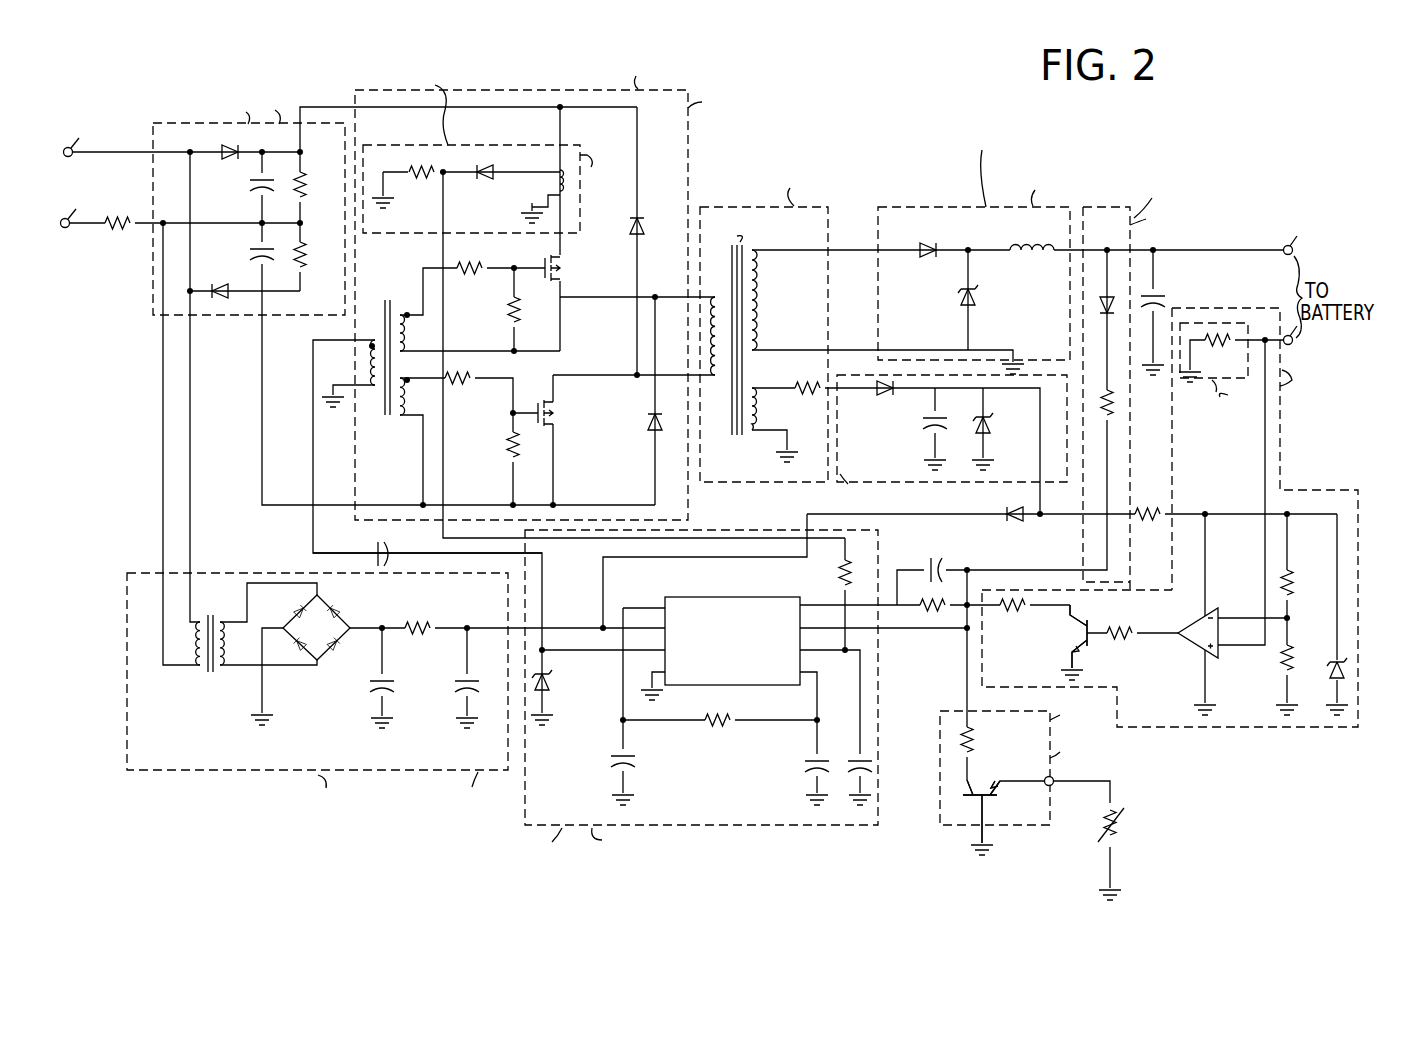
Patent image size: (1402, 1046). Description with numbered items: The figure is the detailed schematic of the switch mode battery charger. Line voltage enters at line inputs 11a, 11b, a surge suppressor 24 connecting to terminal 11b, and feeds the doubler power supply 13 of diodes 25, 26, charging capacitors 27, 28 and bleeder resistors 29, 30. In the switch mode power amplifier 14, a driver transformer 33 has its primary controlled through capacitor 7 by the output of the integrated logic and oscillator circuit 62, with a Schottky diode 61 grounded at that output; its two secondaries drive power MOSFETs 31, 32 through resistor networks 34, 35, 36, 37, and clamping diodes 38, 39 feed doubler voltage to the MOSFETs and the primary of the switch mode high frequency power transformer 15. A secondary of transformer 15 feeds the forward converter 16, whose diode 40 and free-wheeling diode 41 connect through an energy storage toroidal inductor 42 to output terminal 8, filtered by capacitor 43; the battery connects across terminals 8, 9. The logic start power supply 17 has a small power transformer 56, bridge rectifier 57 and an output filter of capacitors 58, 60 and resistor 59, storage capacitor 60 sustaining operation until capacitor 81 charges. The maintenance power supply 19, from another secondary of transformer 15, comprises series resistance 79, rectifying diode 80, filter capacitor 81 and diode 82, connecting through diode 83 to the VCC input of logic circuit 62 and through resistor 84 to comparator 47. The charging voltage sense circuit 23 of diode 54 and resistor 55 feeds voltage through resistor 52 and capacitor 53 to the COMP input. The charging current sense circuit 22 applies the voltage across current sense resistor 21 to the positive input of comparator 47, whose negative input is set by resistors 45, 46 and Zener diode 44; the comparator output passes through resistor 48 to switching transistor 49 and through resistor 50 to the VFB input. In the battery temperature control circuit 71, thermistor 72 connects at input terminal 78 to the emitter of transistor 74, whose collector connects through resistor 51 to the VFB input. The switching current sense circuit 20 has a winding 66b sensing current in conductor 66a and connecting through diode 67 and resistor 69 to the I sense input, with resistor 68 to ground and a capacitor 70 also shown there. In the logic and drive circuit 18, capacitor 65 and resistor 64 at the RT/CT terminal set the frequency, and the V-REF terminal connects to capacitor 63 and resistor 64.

The capacitor 7 is at (378, 550).
The output terminal 8 is at (1282, 242).
The battery terminal 9 is at (1289, 348).
The line input 11a is at (74, 139).
The line input 11b is at (76, 219).
The doubler power supply 13 is at (248, 182).
The switch mode power amplifier 14 is at (575, 287).
The switch mode high frequency power transformer 15 is at (819, 301).
The forward converter 16 is at (974, 230).
The logic start power supply 17 is at (317, 700).
The logic and drive circuit 18 is at (710, 697).
The maintenance power supply 19 is at (942, 448).
The switching current sense circuit 20 is at (452, 136).
The current sense resistor 21 is at (1218, 397).
The charging current sense circuit 22 is at (1176, 517).
The charging voltage sense circuit 23 is at (1164, 370).
The surge suppressor 24 is at (118, 236).
The diode 25 is at (226, 162).
The diode 26 is at (224, 282).
The charging capacitor 27 is at (270, 189).
The charging capacitor 28 is at (270, 260).
The bleeder resistor 29 is at (304, 194).
The bleeder resistor 30 is at (306, 254).
The power MOS FET 31 is at (562, 262).
The power MOS FET 32 is at (555, 405).
The driver transformer 33 is at (384, 331).
The resistor 34 is at (470, 264).
The resistor 35 is at (508, 310).
The resistor 36 is at (468, 392).
The resistor 37 is at (502, 458).
The clamping diode 38 is at (630, 234).
The clamping diode 39 is at (646, 430).
The diode 40 is at (928, 258).
The free-wheeling diode 41 is at (960, 298).
The energy storage toroidal inductor 42 is at (1039, 252).
The filter capacitor 43 is at (1160, 298).
The Zener diode 44 is at (1330, 670).
The resistor 45 is at (1294, 590).
The resistor 46 is at (1280, 670).
The comparator 47 is at (1194, 628).
The resistor 48 is at (1124, 646).
The switching transistor 49 is at (1074, 647).
The resistor 50 is at (1022, 612).
The resistor 51 is at (973, 748).
The resistor 52 is at (942, 612).
The capacitor 53 is at (938, 573).
The diode 54 is at (1098, 292).
The resistor 55 is at (1117, 422).
The small power transformer 56 is at (208, 660).
The bridge rectifier 57 is at (315, 640).
The capacitor 58 is at (388, 690).
The resistor 59 is at (436, 624).
The storage capacitor 60 is at (472, 690).
The Schottky diode 61 is at (552, 685).
The integrated logic and oscillator circuit 62 is at (650, 600).
The capacitor 63 is at (630, 765).
The resistor 64 is at (728, 715).
The capacitor 65 is at (809, 770).
The conductor 66a is at (557, 170).
The winding 66b is at (545, 205).
The diode 67 is at (475, 190).
The resistor 68 is at (421, 190).
The resistor 69 is at (860, 560).
The capacitor 70 is at (854, 756).
The battery temperature control circuit 71 is at (1132, 763).
The thermistor 72 is at (1115, 850).
The transistor 74 is at (993, 800).
The input terminal 78 is at (1055, 786).
The series resistance 79 is at (812, 390).
The rectifying diode 80 is at (887, 406).
The filter capacitor 81 is at (928, 430).
The diode 82 is at (992, 434).
The diode 83 is at (1017, 528).
The resistor 84 is at (1154, 518).